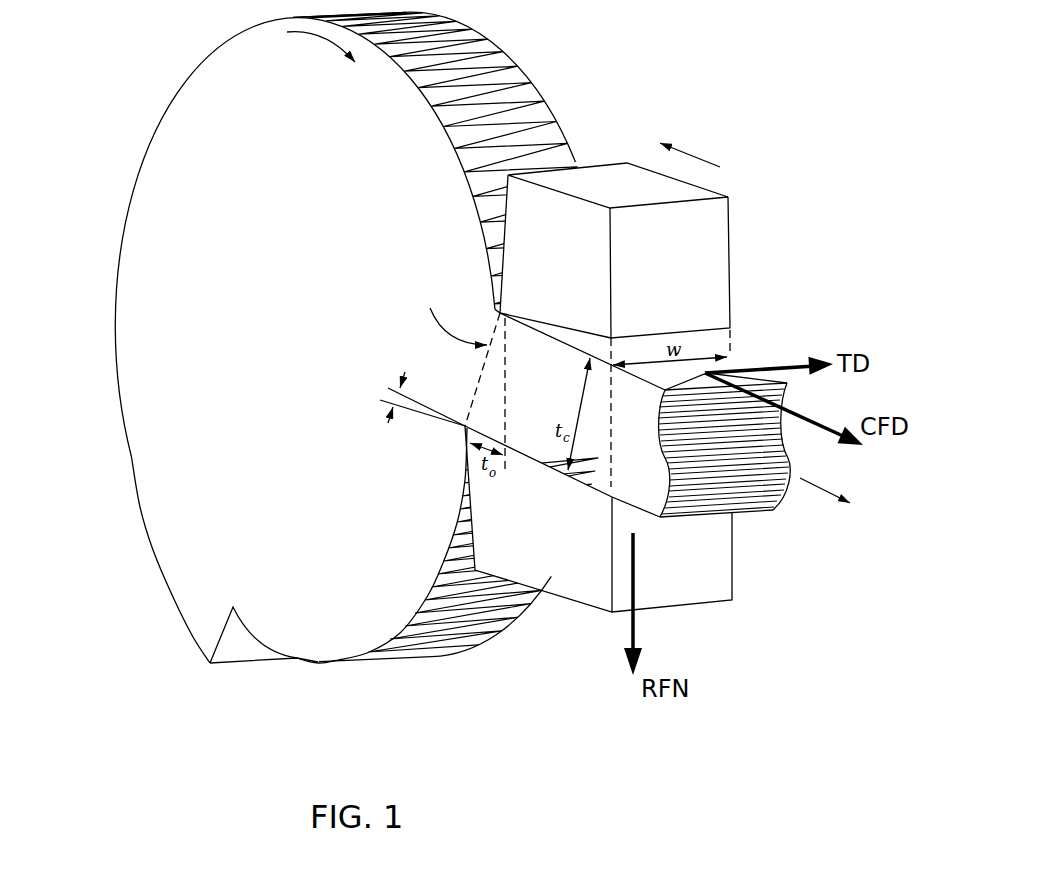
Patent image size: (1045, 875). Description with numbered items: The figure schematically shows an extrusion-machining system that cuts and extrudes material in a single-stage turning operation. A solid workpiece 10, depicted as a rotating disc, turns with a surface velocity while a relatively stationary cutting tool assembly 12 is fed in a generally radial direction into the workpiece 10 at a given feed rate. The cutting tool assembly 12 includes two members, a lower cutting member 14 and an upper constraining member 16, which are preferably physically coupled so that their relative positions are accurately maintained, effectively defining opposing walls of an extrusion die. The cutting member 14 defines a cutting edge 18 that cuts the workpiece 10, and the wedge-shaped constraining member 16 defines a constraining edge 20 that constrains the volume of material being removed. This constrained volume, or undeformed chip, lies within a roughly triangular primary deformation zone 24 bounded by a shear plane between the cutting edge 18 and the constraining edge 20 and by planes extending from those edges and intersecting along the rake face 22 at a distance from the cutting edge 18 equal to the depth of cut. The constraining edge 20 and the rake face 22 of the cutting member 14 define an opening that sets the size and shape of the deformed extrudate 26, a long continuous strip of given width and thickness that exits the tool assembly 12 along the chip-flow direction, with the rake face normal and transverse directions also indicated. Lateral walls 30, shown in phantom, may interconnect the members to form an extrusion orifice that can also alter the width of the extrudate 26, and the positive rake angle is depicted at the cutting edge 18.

The workpiece 10 is at (107, 195).
The cutting tool assembly 12 is at (590, 399).
The cutting member 14 is at (556, 508).
The constraining member 16 is at (652, 250).
The cutting edge 18 is at (465, 426).
The constraining edge 20 is at (500, 313).
The rake face 22 is at (533, 458).
The primary deformation zone 24 is at (490, 403).
The extrudate 26 is at (733, 475).
The lateral walls 30 is at (730, 342).